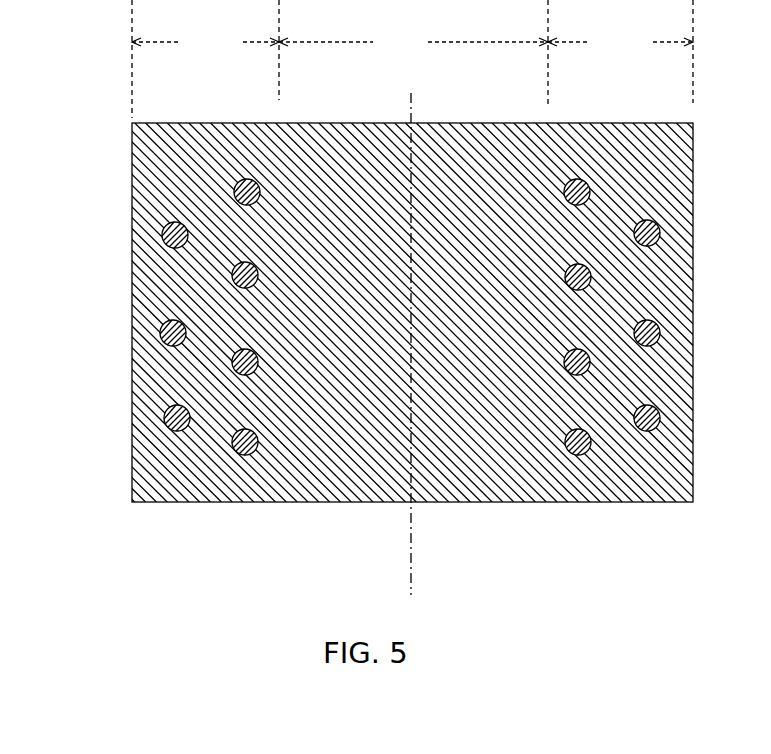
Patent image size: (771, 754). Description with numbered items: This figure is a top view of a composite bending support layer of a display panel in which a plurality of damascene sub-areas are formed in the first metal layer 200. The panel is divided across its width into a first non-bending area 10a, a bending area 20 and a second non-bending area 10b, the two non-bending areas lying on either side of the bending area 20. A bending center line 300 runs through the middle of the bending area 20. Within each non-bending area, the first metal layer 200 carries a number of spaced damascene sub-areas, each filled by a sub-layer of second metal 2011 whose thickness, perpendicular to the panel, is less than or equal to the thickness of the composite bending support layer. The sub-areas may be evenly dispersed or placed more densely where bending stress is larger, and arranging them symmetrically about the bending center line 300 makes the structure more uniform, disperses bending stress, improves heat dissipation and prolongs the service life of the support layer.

The first metal layer 200 is at (353, 477).
The sub-layer of second metal 2011 is at (165, 322).
The bending center line 300 is at (411, 502).
The first non-bending area 10a is at (205, 59).
The bending area 20 is at (413, 52).
The second non-bending area 10b is at (620, 51).